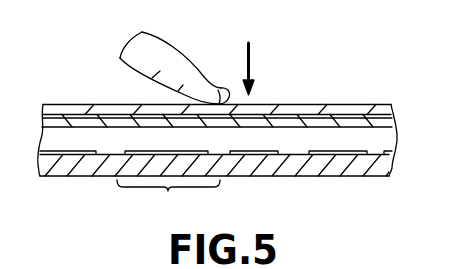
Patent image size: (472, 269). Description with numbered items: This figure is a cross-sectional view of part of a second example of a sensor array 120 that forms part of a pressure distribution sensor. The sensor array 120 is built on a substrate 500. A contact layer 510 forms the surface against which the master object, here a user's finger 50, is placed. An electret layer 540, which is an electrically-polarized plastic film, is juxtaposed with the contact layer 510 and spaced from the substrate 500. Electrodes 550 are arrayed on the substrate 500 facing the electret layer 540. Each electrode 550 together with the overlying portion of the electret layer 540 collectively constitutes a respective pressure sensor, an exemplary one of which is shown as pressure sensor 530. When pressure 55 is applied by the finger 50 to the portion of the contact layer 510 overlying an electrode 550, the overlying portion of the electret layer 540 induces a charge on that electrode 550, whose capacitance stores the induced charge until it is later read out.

The user's finger 50 is at (189, 57).
The pressure 55 is at (251, 60).
The sensor array 120 is at (339, 97).
The contact layer 510 is at (85, 108).
The electret layer 540 is at (371, 112).
The substrate 500 is at (50, 177).
The electrodes 550 is at (125, 151).
The pressure sensor 530 is at (168, 197).